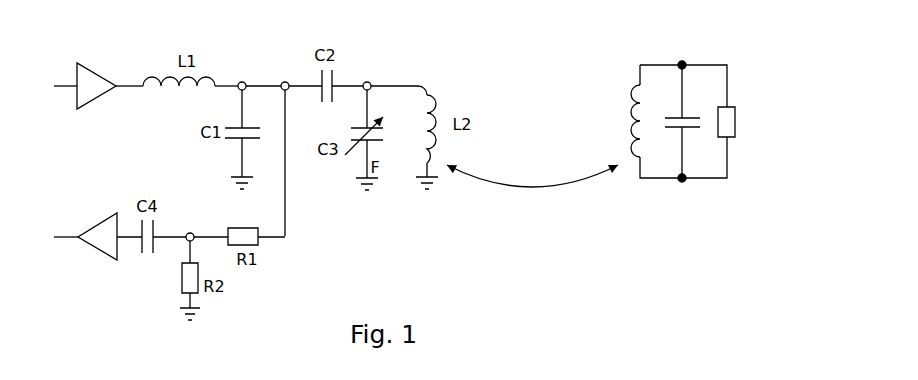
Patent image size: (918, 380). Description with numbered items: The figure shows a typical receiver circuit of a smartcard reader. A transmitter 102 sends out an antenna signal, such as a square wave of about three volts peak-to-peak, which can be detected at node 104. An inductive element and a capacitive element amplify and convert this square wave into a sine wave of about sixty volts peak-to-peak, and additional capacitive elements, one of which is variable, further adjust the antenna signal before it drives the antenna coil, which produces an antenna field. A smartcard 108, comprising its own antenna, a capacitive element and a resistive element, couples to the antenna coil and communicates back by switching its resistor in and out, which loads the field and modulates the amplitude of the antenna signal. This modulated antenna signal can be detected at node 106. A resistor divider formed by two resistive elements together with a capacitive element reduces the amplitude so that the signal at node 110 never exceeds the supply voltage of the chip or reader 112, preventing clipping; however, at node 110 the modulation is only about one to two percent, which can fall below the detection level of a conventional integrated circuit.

The transmitter 102 is at (93, 92).
The node 104 is at (125, 85).
The node 106 is at (285, 84).
The smartcard 108 is at (655, 172).
The node 110 is at (190, 233).
The reader 112 is at (107, 247).